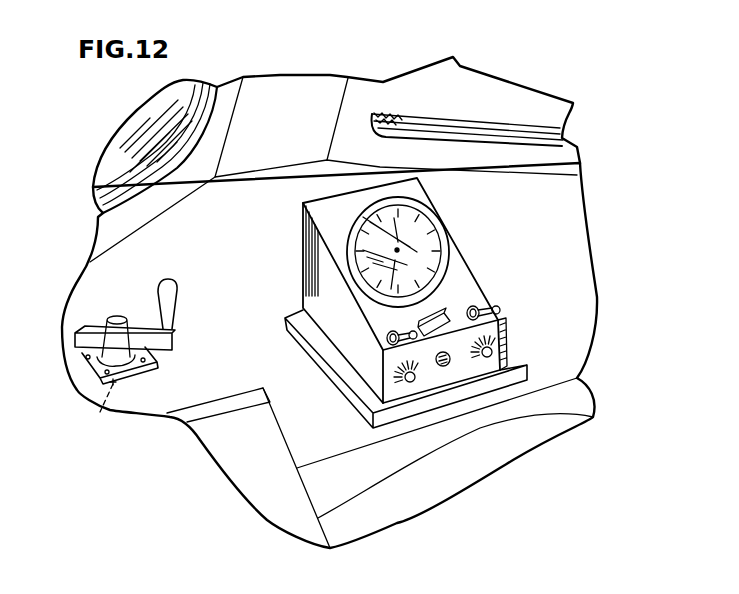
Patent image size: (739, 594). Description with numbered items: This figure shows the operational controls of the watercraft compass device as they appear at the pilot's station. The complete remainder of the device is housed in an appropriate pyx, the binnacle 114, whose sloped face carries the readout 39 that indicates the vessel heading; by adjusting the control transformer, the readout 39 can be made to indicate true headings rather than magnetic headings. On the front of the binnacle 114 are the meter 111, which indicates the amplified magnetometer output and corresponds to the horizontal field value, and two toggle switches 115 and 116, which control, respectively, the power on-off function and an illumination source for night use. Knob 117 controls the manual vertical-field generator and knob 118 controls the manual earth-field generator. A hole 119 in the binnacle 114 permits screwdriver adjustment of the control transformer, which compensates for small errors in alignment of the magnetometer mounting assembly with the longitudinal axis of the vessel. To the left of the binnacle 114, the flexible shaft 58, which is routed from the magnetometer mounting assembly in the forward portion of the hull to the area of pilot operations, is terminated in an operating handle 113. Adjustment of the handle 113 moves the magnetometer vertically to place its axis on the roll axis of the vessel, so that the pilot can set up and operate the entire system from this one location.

The binnacle 114 is at (431, 208).
The readout 39 is at (432, 240).
The meter 111 is at (446, 311).
The toggle switch 115 is at (401, 333).
The toggle switch 116 is at (498, 307).
The knob 117 is at (393, 379).
The knob 118 is at (491, 343).
The hole 119 is at (452, 365).
The operating handle 113 is at (177, 284).
The flexible shaft 58 is at (118, 387).